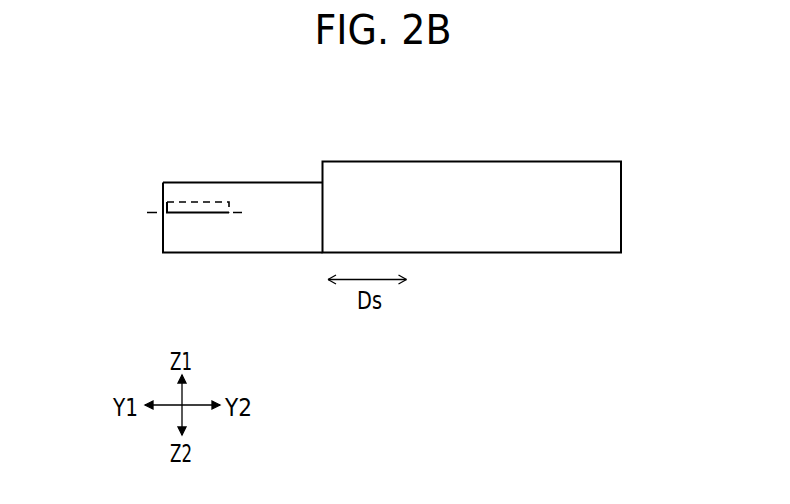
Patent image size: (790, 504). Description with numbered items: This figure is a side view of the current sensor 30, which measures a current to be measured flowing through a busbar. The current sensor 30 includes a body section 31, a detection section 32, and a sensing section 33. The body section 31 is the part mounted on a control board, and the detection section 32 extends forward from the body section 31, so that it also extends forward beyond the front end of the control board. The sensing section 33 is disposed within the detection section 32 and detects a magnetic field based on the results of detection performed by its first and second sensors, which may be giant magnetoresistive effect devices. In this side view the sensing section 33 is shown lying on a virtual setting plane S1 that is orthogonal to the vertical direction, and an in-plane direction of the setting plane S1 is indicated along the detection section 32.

The current sensor 30 is at (391, 277).
The body section 31 is at (584, 233).
The detection section 32 is at (299, 238).
The sensing section 33 is at (199, 202).
The setting plane S1 is at (212, 213).